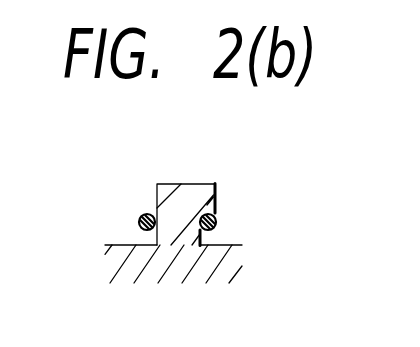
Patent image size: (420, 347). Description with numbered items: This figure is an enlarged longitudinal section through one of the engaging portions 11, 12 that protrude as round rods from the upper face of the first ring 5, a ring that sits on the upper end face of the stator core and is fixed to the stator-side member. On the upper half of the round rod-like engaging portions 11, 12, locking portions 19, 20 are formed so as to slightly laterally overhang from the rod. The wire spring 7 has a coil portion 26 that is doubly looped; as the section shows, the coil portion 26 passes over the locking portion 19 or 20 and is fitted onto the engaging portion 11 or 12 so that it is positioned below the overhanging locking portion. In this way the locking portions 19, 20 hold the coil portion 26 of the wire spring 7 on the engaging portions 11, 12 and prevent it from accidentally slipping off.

The first ring 5 is at (81, 260).
The engaging portion 11 is at (198, 177).
The engaging portion 12 is at (198, 177).
The locking portion 19 is at (241, 186).
The locking portion 20 is at (241, 186).
The coil portion 26 is at (187, 192).
The wire spring 7 is at (140, 215).